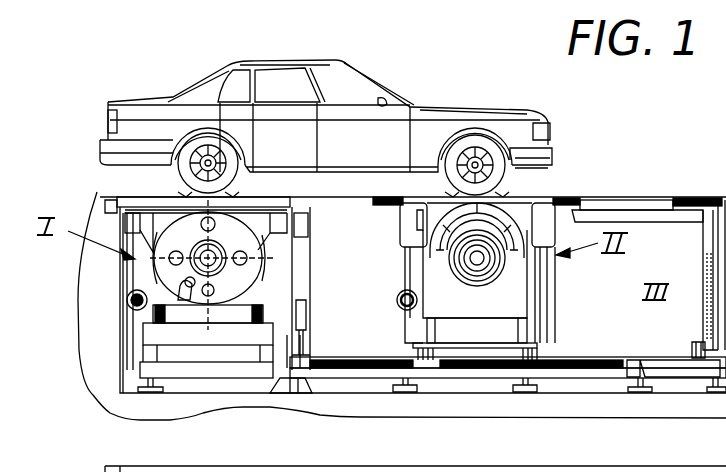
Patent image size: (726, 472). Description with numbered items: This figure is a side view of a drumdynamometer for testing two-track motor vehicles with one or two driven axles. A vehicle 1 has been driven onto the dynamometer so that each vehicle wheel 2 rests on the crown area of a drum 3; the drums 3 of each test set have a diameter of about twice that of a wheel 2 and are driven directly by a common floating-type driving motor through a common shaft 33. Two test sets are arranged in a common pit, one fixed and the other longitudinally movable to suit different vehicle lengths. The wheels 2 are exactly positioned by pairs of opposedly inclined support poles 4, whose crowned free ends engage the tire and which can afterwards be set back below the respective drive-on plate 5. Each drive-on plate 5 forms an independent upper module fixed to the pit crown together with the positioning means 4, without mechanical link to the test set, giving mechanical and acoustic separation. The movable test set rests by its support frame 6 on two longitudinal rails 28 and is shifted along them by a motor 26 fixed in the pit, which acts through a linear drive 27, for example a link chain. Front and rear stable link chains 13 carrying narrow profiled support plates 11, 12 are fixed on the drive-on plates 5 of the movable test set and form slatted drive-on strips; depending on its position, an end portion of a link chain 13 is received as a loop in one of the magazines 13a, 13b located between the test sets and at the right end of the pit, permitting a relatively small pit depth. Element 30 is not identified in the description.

The vehicle 1 is at (455, 118).
The vehicle wheel 2 is at (184, 180).
The drum 3 is at (105, 200).
The support pole 4 is at (235, 197).
The drive-on plate 5 is at (135, 204).
The support frame 6 is at (197, 333).
The support plate 11 is at (386, 204).
The support plate 12 is at (696, 200).
The link chain 13 is at (677, 198).
The magazine 13a is at (313, 264).
The magazine 13b is at (713, 238).
The motor 26 is at (296, 372).
The linear drive 27 is at (505, 372).
The longitudinal rail 28 is at (607, 358).
The floor base 30 is at (609, 406).
The common shaft 33 is at (508, 263).